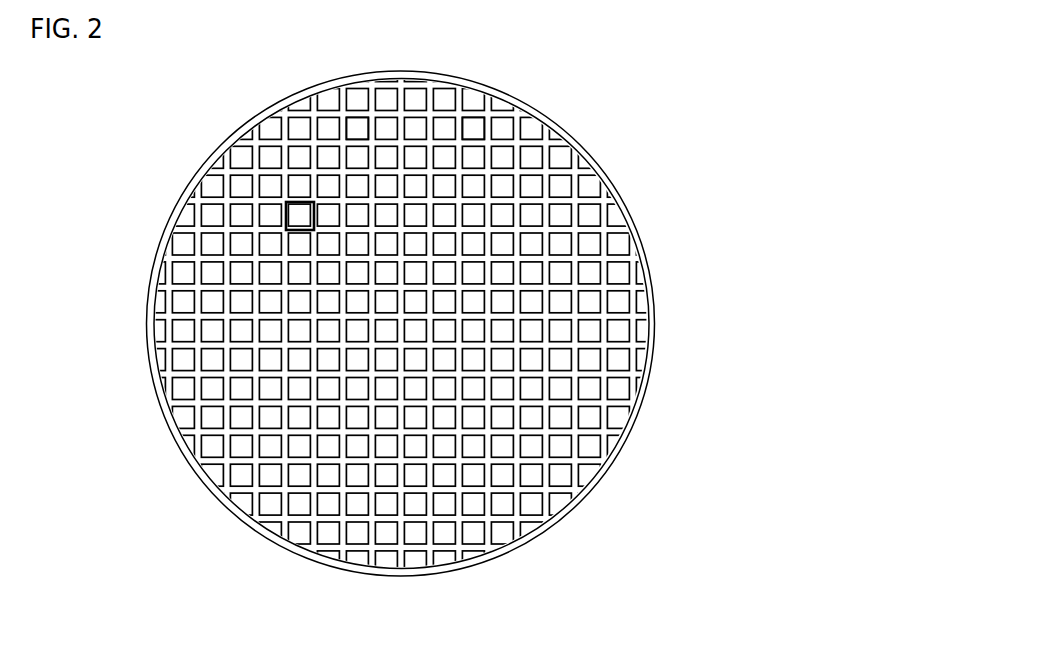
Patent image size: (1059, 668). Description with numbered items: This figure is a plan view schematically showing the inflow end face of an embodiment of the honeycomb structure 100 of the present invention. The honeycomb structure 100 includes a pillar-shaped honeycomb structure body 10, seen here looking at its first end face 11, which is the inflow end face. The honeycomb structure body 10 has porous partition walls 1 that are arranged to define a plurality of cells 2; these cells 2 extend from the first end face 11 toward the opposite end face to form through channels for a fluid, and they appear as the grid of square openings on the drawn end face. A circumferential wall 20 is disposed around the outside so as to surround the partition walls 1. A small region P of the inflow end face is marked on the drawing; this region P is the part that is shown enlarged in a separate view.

The partition walls 1 is at (370, 127).
The cells 2 is at (474, 128).
The honeycomb structure body 10 is at (668, 332).
The first end face 11 is at (215, 148).
The circumferential wall 20 is at (600, 481).
The honeycomb structure 100 is at (737, 72).
The region P is at (285, 216).